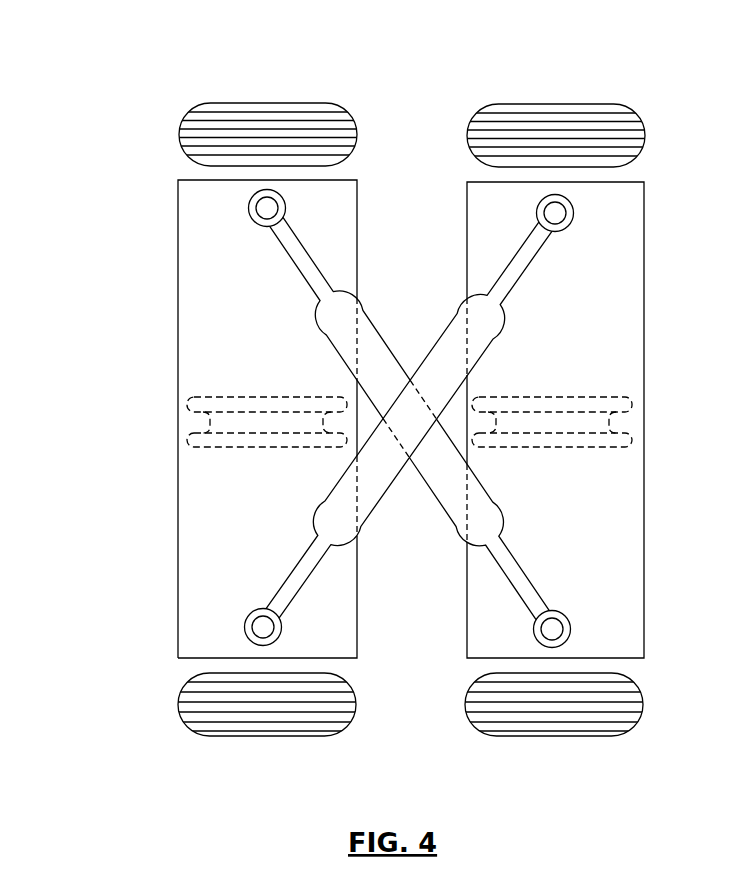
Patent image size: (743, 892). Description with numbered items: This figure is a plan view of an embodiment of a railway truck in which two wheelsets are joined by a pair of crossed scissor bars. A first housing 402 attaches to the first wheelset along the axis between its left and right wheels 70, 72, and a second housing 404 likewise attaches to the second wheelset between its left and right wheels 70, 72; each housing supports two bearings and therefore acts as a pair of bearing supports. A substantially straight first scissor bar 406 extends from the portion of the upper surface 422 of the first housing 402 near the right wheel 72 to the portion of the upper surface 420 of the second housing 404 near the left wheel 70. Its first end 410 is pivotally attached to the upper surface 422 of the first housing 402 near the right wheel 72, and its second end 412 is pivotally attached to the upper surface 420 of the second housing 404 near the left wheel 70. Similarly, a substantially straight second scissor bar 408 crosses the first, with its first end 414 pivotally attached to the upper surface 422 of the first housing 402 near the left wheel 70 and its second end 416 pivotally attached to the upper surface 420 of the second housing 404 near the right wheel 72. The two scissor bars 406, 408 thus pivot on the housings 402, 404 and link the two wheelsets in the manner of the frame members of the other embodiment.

The left wheel 70 is at (343, 723).
The right wheel 72 is at (337, 105).
The first housing 402 is at (192, 543).
The second housing 404 is at (632, 523).
The first scissor bar 406 is at (370, 318).
The second scissor bar 408 is at (372, 513).
The first end of first scissor bar 410 is at (253, 222).
The second end of first scissor bar 412 is at (570, 623).
The first end of second scissor bar 414 is at (243, 627).
The second end of second scissor bar 416 is at (573, 215).
The upper surface of second housing 420 is at (552, 387).
The upper surface of first housing 422 is at (267, 387).